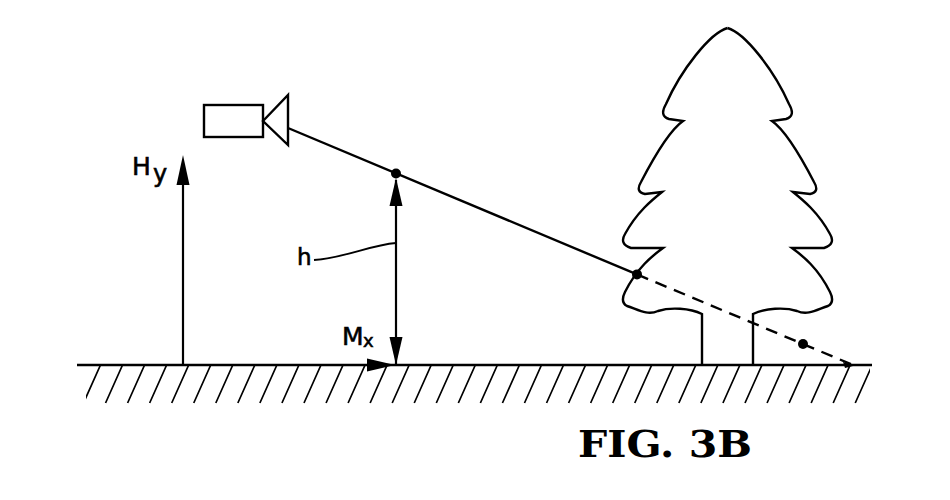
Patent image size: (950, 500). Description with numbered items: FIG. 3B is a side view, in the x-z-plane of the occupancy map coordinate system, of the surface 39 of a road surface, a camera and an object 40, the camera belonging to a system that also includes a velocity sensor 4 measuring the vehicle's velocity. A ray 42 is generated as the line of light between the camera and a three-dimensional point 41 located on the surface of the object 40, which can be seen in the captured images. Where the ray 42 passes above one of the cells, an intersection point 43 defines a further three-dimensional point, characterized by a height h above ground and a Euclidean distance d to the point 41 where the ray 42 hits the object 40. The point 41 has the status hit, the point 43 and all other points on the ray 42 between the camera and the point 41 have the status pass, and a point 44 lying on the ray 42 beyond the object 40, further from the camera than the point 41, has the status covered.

The velocity sensor 4 is at (216, 105).
The surface 39 is at (263, 365).
The object 40 is at (774, 72).
The 3D point 41 is at (633, 277).
The ray 42 is at (448, 193).
The intersection point 43 is at (397, 168).
The 3D point 44 is at (806, 341).